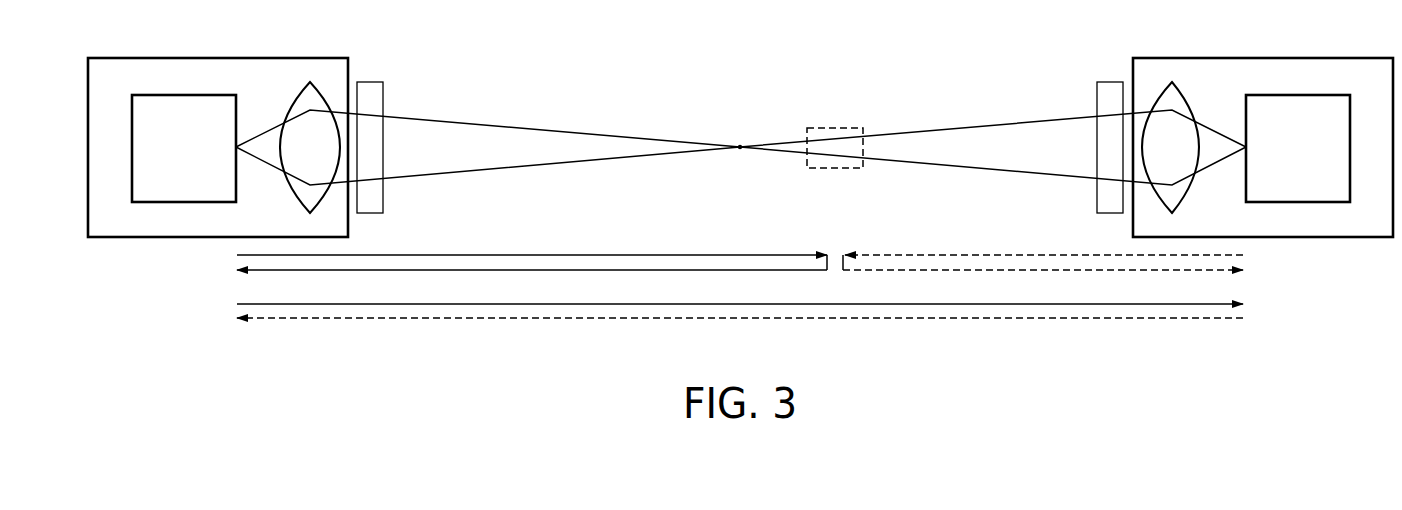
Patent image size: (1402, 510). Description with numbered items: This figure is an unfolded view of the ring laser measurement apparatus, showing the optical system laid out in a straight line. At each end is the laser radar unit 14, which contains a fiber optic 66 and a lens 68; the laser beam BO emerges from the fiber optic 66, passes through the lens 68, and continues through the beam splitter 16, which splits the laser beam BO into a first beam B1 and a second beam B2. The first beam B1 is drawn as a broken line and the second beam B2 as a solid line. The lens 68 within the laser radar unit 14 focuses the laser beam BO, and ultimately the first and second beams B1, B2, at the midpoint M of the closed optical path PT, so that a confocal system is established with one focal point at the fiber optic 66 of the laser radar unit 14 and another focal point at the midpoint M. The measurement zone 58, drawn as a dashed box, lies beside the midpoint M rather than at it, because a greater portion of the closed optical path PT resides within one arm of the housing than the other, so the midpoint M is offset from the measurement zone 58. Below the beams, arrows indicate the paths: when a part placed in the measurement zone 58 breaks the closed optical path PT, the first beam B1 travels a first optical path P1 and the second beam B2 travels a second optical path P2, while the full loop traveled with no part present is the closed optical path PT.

The laser radar unit 14 is at (228, 58).
The beam splitter 16 is at (372, 82).
The measurement zone 58 is at (828, 128).
The fiber optic 66 is at (178, 95).
The lens 68 is at (300, 93).
The midpoint M is at (740, 147).
The first beam B1 is at (997, 125).
The second beam B2 is at (483, 122).
The laser beam BO is at (338, 185).
The first optical path P1 is at (924, 246).
The second optical path P2 is at (590, 240).
The closed optical path PT is at (1263, 306).